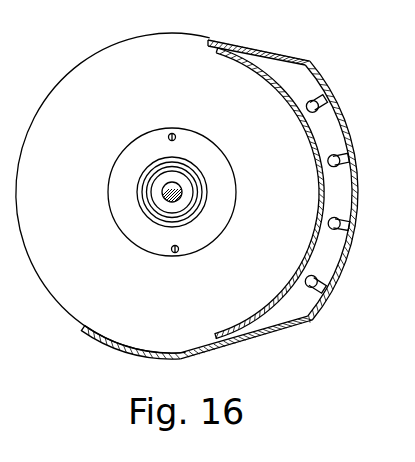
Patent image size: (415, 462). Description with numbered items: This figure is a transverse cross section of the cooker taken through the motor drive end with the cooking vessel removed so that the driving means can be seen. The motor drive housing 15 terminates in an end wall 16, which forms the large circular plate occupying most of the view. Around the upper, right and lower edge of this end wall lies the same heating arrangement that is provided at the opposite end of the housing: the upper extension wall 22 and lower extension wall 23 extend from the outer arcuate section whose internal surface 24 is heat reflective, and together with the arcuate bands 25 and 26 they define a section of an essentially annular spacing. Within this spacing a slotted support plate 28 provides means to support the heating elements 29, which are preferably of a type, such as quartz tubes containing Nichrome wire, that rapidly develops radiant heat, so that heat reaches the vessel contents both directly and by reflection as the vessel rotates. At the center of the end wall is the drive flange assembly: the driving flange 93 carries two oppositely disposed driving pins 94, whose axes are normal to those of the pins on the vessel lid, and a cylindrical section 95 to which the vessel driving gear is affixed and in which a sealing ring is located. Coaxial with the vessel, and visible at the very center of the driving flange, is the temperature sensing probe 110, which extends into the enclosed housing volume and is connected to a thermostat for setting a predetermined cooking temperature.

The motor drive housing 15 is at (76, 319).
The end wall 16 is at (110, 53).
The upper extension wall 22 is at (267, 52).
The lower extension wall 23 is at (260, 332).
The internal surface 24 is at (341, 119).
The arcuate band 25 is at (324, 188).
The arcuate band 26 is at (270, 72).
The slotted support plate 28 is at (298, 90).
The heating elements 29 is at (318, 106).
The driving flange 93 is at (223, 223).
The driving pins 94 is at (168, 135).
The cylindrical section 95 is at (190, 185).
The temperature sensing probe 110 is at (183, 192).